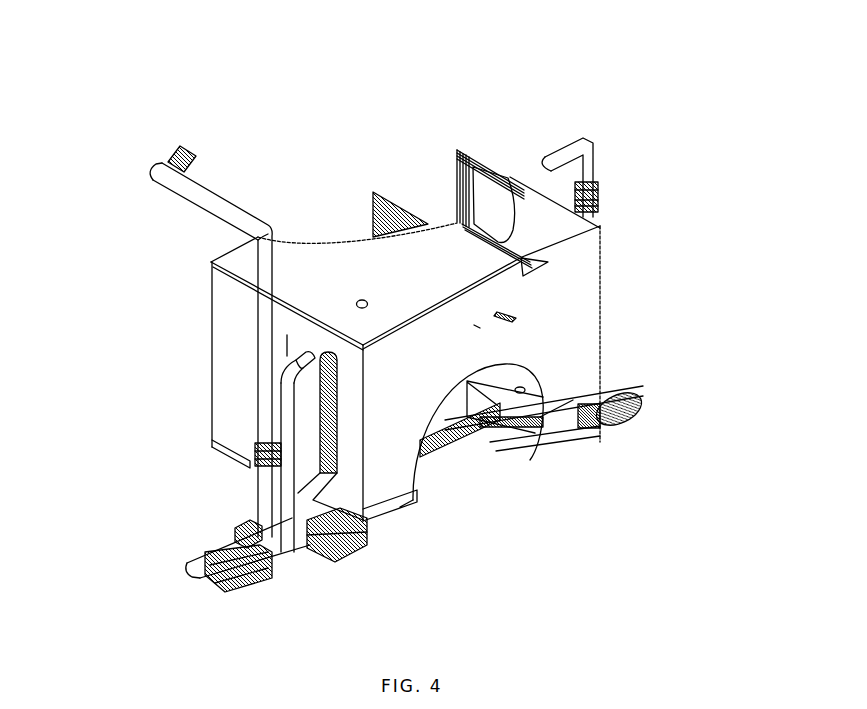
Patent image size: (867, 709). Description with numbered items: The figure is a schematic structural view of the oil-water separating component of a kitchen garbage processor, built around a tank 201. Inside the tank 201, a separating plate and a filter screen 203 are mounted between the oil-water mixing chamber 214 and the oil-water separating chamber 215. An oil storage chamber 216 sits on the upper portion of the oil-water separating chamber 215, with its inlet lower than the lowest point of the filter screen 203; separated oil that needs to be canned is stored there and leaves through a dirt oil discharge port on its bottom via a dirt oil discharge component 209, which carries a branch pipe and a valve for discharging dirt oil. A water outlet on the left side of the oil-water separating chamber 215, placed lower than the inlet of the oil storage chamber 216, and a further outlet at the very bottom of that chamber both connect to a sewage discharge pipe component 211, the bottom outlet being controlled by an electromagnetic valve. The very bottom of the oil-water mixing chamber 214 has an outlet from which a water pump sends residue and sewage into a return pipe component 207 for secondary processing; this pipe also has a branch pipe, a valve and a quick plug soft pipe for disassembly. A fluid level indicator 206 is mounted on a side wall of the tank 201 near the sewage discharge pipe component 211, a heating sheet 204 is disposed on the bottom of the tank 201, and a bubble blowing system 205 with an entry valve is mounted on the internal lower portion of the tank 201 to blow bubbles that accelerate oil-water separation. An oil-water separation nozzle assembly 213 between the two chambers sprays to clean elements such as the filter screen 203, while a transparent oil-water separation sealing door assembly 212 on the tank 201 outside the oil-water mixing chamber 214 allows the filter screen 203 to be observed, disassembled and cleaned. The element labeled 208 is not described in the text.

The tank 201 is at (560, 258).
The filter screen 203 is at (373, 192).
The heating sheet 204 is at (468, 436).
The bubble blowing system 205 is at (466, 432).
The fluid level indicator 206 is at (368, 558).
The return pipe component 207 is at (596, 168).
The bottom bracket 208 is at (235, 531).
The dirt oil discharge component 209 is at (270, 378).
The sewage discharge pipe component 211 is at (230, 580).
The oil-water separation sealing door assembly 212 is at (457, 172).
The oil-water separation nozzle assembly 213 is at (497, 311).
The oil-water mixing chamber 214 is at (520, 390).
The oil-water separating chamber 215 is at (478, 437).
The oil storage chamber 216 is at (470, 440).